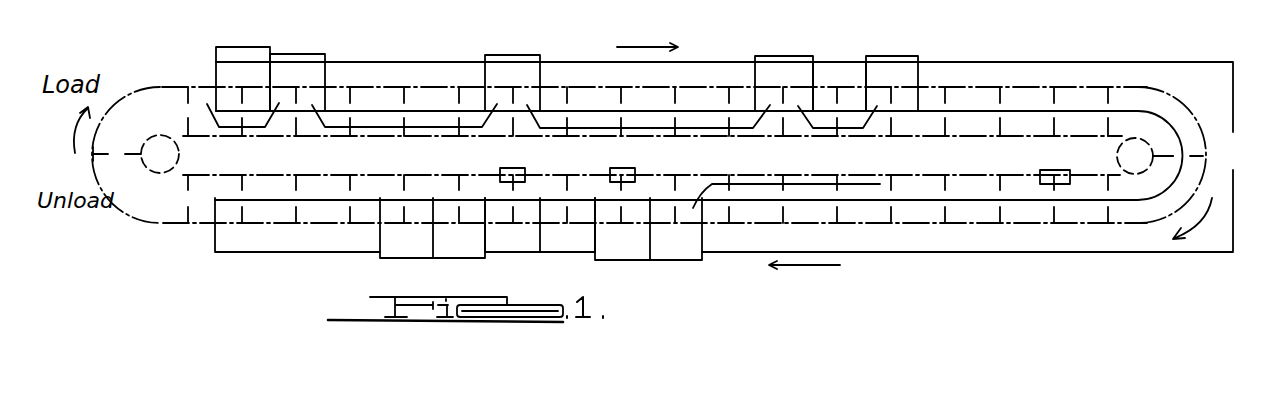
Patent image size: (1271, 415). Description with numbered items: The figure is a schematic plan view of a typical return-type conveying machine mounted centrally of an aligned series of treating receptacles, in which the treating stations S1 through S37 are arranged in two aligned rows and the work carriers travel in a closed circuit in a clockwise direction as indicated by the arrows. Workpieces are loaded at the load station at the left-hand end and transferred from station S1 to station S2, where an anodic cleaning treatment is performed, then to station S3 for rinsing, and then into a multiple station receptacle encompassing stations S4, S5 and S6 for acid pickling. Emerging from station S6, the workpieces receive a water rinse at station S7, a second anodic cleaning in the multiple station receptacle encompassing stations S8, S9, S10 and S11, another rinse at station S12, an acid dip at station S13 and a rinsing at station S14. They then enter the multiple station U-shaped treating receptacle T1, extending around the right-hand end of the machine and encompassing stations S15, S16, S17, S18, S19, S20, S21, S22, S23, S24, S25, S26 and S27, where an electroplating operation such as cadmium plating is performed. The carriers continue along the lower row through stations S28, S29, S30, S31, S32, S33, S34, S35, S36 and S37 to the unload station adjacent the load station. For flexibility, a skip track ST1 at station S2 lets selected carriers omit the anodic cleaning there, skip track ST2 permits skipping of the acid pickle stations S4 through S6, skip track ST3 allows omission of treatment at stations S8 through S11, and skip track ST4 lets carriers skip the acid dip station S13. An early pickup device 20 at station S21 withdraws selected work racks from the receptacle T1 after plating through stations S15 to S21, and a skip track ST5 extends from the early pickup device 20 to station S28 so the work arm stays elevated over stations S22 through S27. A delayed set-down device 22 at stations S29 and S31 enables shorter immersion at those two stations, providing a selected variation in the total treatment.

The treating station S1 is at (183, 101).
The treating station S2 is at (243, 81).
The treating station S3 is at (297, 84).
The treating station S4 is at (350, 84).
The treating station S5 is at (404, 84).
The treating station S6 is at (459, 84).
The treating station S7 is at (512, 84).
The treating station S8 is at (567, 84).
The treating station S9 is at (621, 101).
The treating station S10 is at (675, 101).
The treating station S11 is at (729, 101).
The treating station S12 is at (784, 96).
The treating station S13 is at (839, 99).
The treating station S14 is at (892, 96).
The treating station S15 is at (948, 101).
The treating station S16 is at (1003, 101).
The treating station S17 is at (1058, 101).
The treating station S18 is at (1114, 101).
The treating station S19 is at (1201, 159).
The treating station S20 is at (1108, 214).
The treating station S21 is at (1050, 214).
The treating station S22 is at (1000, 214).
The treating station S23 is at (945, 214).
The treating station S24 is at (891, 214).
The treating station S25 is at (837, 214).
The treating station S26 is at (783, 214).
The treating station S27 is at (729, 214).
The treating station S28 is at (676, 217).
The treating station S29 is at (622, 217).
The treating station S30 is at (567, 214).
The treating station S31 is at (512, 214).
The treating station S32 is at (459, 216).
The treating station S33 is at (406, 216).
The treating station S34 is at (350, 214).
The treating station S35 is at (296, 214).
The treating station S36 is at (240, 214).
The treating station S37 is at (178, 214).
The skip track ST1 is at (248, 127).
The skip track ST2 is at (400, 127).
The skip track ST3 is at (667, 128).
The skip track ST4 is at (817, 128).
The skip track ST5 is at (880, 184).
The early pickup device 20 is at (1058, 170).
The delayed set-down device 22 is at (617, 168).
The multiple station U-shaped treating receptacle T1 is at (1191, 241).